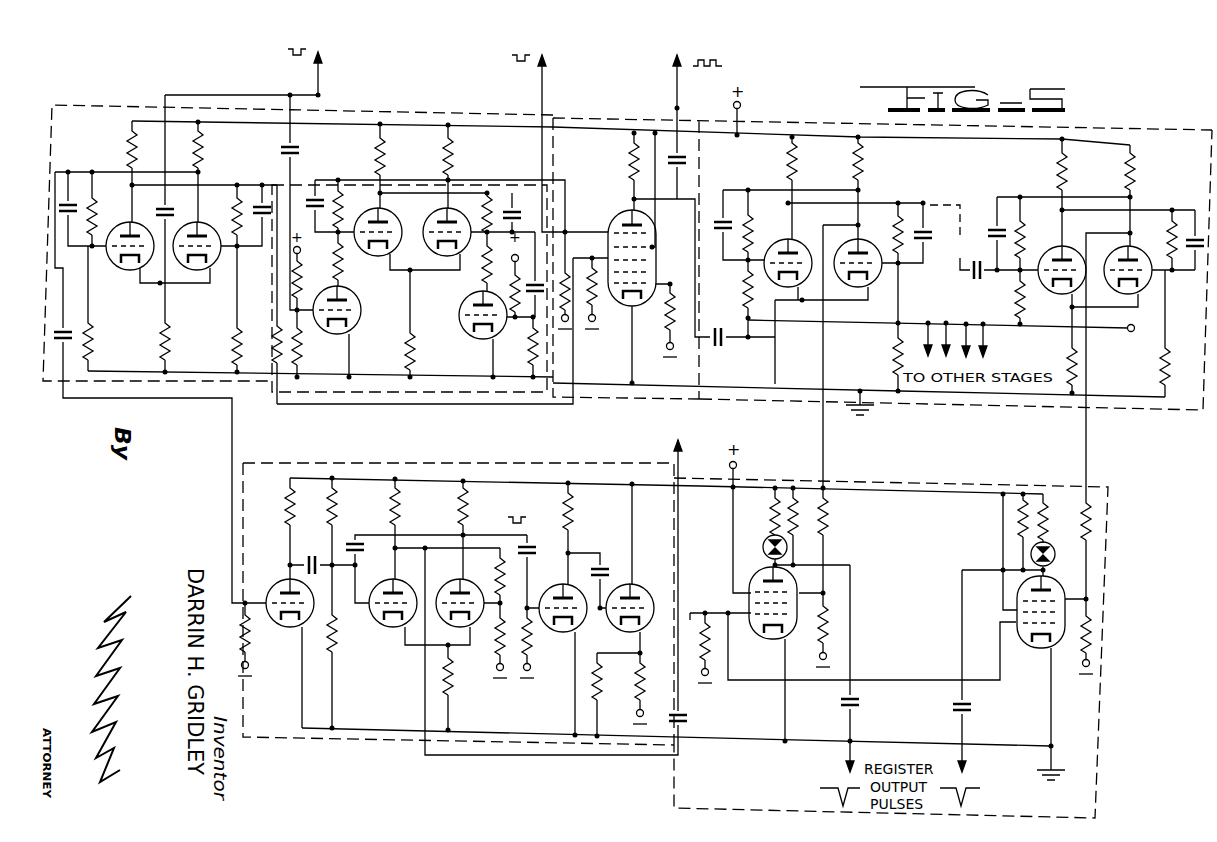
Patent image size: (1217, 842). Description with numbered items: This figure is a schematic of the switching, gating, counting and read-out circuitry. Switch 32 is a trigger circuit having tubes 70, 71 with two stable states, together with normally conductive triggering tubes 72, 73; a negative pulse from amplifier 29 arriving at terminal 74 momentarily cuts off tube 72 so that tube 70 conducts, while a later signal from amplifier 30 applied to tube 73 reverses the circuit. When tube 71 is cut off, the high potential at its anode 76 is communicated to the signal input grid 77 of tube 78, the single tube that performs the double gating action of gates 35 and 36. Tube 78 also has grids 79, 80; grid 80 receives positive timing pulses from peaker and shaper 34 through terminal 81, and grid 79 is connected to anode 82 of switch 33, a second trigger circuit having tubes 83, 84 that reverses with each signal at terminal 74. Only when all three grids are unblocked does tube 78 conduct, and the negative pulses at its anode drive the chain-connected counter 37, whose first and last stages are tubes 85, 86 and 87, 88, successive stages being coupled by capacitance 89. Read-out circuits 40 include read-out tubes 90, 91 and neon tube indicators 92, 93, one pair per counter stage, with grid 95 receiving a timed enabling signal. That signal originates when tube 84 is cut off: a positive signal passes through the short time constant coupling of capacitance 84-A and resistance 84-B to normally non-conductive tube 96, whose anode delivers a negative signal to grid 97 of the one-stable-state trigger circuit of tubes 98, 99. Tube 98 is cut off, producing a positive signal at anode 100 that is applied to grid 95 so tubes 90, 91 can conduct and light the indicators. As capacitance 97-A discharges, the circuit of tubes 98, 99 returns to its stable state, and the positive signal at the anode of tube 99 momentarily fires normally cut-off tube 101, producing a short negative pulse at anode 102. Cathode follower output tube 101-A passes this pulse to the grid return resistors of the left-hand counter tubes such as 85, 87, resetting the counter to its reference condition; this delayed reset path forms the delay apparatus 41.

The amplifier 29 is at (364, 66).
The amplifier 30 is at (583, 136).
The switch 32 is at (375, 402).
The switch 33 is at (153, 384).
The peaker and shaper 34 is at (736, 73).
The gate 35 is at (882, 258).
The gate 36 is at (604, 399).
The counter 37 is at (1163, 418).
The read-out circuits 40 is at (670, 787).
The delay apparatus 41 is at (366, 742).
The tube 70 is at (386, 220).
The tube 71 is at (447, 225).
The triggering tube 72 is at (362, 310).
The triggering tube 73 is at (461, 313).
The terminal 74 is at (318, 95).
The anode 76 is at (485, 218).
The signal input grid 77 is at (609, 227).
The tube 78 is at (626, 307).
The grid 79 is at (609, 254).
The grid 80 is at (670, 284).
The terminal 81 is at (677, 108).
The anode 82 is at (117, 222).
The tube 83 is at (118, 264).
The tube 84 is at (206, 224).
The capacitance 84-A is at (89, 324).
The resistance 84-B is at (252, 644).
The tube 85 is at (774, 244).
The tube 86 is at (866, 244).
The tube 87 is at (1045, 290).
The tube 88 is at (1146, 292).
The coupling capacitance 89 is at (974, 275).
The read-out tube 90 is at (755, 638).
The read-out tube 91 is at (1020, 645).
The neon tube indicator 92 is at (764, 538).
The neon tube indicator 93 is at (1050, 549).
The grid 95 is at (704, 604).
The tube 96 is at (280, 584).
The grid 97 is at (364, 610).
The capacitance 97-A is at (348, 540).
The tube 98 is at (386, 584).
The tube 99 is at (477, 585).
The anode 100 is at (420, 574).
The tube 101 is at (528, 640).
The cathode follower type output tube 101-A is at (625, 588).
The anode 102 is at (555, 588).